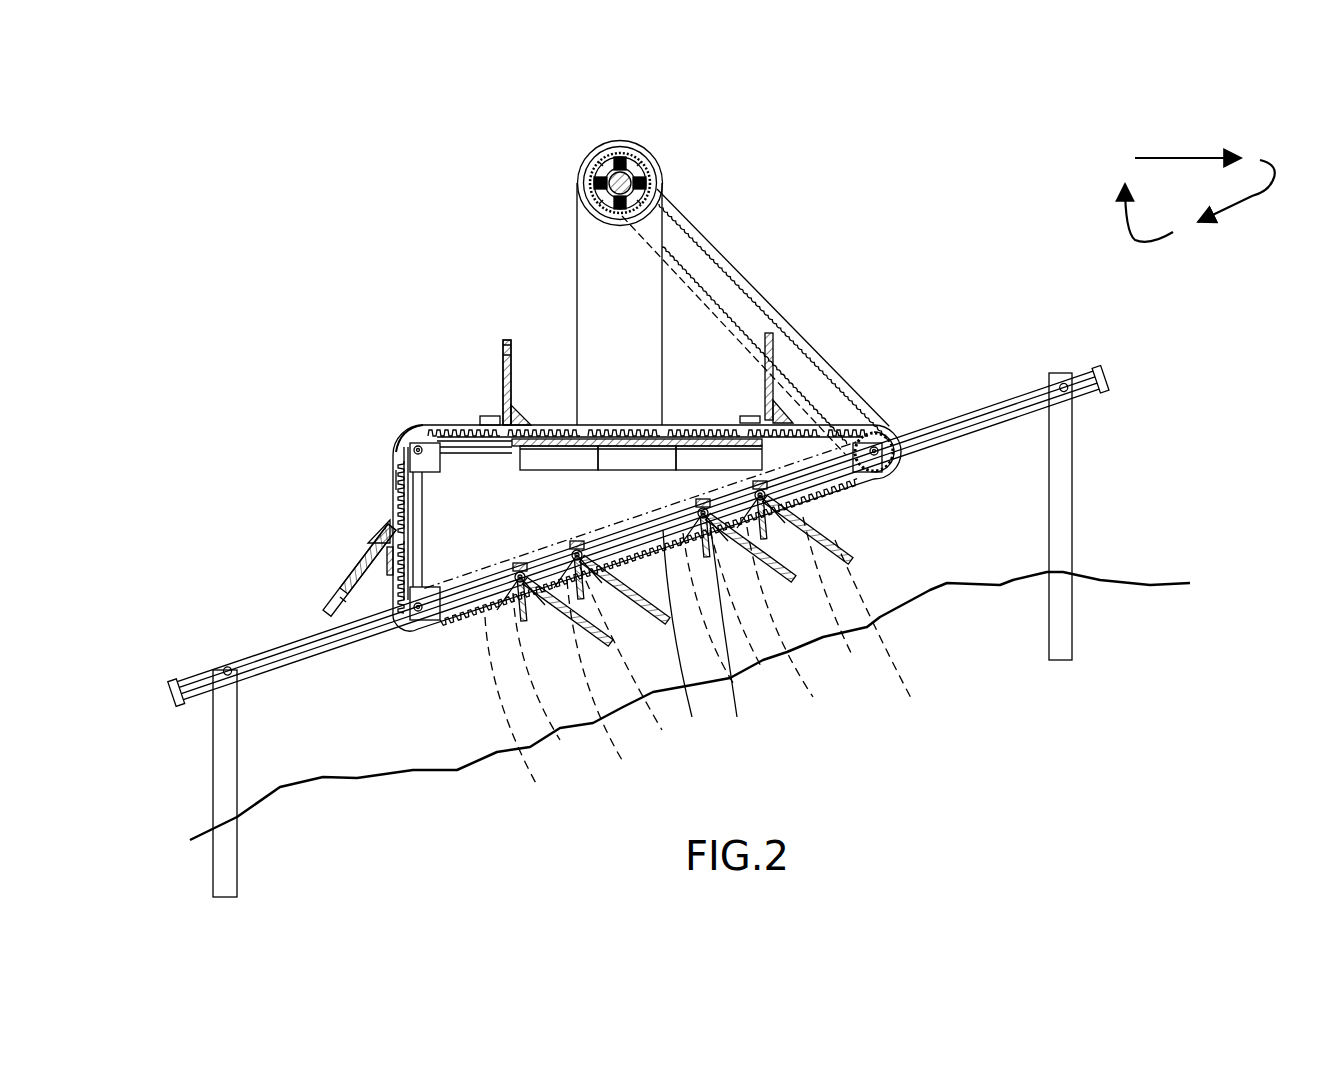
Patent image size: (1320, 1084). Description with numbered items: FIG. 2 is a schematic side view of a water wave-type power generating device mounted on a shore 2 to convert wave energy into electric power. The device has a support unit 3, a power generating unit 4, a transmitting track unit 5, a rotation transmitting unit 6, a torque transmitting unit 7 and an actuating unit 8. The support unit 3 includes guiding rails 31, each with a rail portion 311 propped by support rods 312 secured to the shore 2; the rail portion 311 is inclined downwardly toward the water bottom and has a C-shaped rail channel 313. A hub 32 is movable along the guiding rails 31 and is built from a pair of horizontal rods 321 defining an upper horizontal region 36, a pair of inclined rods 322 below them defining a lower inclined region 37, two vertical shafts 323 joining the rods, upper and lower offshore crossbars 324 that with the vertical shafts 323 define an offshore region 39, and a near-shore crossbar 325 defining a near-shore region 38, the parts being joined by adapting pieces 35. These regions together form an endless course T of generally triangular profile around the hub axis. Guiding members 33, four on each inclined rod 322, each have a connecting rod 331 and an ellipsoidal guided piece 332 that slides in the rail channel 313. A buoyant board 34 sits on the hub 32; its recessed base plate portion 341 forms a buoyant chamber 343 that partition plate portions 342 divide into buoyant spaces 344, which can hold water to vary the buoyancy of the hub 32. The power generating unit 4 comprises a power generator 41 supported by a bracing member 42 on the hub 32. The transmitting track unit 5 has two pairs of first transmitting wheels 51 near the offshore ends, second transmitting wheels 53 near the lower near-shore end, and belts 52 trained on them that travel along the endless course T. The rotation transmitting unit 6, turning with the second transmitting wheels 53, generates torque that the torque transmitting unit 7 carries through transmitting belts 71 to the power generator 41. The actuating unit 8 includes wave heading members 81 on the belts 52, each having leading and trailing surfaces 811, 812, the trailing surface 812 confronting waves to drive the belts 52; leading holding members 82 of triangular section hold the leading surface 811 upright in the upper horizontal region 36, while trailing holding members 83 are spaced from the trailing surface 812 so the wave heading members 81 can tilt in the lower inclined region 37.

The shore 2 is at (1125, 580).
The support unit 3 is at (1063, 362).
The guiding rails 31 is at (1081, 402).
The rail portion 311 is at (995, 407).
The support rods 312 is at (1062, 503).
The rail channel 313 is at (967, 425).
The hub 32 is at (408, 517).
The horizontal rods 321 is at (822, 452).
The inclined rods 322 is at (648, 595).
The vertical shafts 323 is at (420, 560).
The offshore crossbar 324 is at (415, 449).
The near-shore crossbar 325 is at (890, 453).
The guiding members 33 is at (657, 603).
The connecting rod 331 is at (698, 648).
The guided piece 332 is at (719, 670).
The buoyant board 34 is at (487, 457).
The base plate portion 341 is at (432, 423).
The partition plate portions 342 is at (628, 453).
The buoyant chamber 343 is at (757, 395).
The buoyant spaces 344 is at (582, 452).
The adapting pieces 35 is at (425, 465).
The upper horizontal region 36 is at (565, 420).
The lower inclined region 37 is at (681, 629).
The near-shore region 38 is at (903, 420).
The offshore region 39 is at (362, 533).
The power generating unit 4 is at (598, 136).
The power generator 41 is at (592, 167).
The bracing member 42 is at (613, 237).
The transmitting track unit 5 is at (421, 421).
The first transmitting wheels 51 is at (400, 447).
The belts 52 is at (390, 482).
The second transmitting wheels 53 is at (887, 450).
The rotation transmitting unit 6 is at (883, 418).
The torque transmitting unit 7 is at (768, 283).
The transmitting belts 71 is at (714, 246).
The actuating unit 8 is at (498, 317).
The wave heading members 81 is at (508, 330).
The leading surface 811 is at (508, 363).
The trailing surface 812 is at (502, 353).
The leading holding members 82 is at (510, 412).
The trailing holding members 83 is at (490, 420).
The endless course T is at (1180, 158).